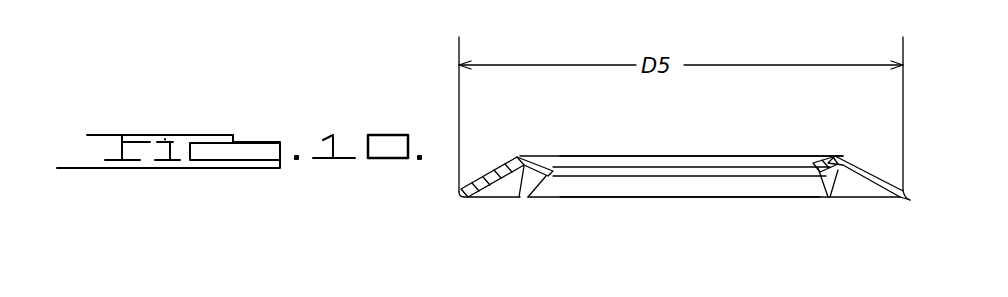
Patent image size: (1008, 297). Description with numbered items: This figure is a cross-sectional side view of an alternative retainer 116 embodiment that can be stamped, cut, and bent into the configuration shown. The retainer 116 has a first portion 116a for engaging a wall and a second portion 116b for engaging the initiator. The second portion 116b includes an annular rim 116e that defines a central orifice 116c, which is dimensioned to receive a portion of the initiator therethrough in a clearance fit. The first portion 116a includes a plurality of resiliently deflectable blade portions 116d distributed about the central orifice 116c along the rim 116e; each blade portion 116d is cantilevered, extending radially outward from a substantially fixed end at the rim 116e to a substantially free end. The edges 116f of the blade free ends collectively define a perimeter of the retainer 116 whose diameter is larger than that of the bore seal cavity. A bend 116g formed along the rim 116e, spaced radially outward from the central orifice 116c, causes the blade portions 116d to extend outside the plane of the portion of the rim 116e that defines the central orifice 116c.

The retainer 116 is at (463, 207).
The first portion 116a is at (491, 163).
The second portion 116b is at (549, 163).
The central orifice 116c is at (641, 167).
The blade portions 116d is at (704, 178).
The annular rim 116e is at (758, 156).
The edges 116f is at (904, 200).
The bend 116g is at (833, 160).